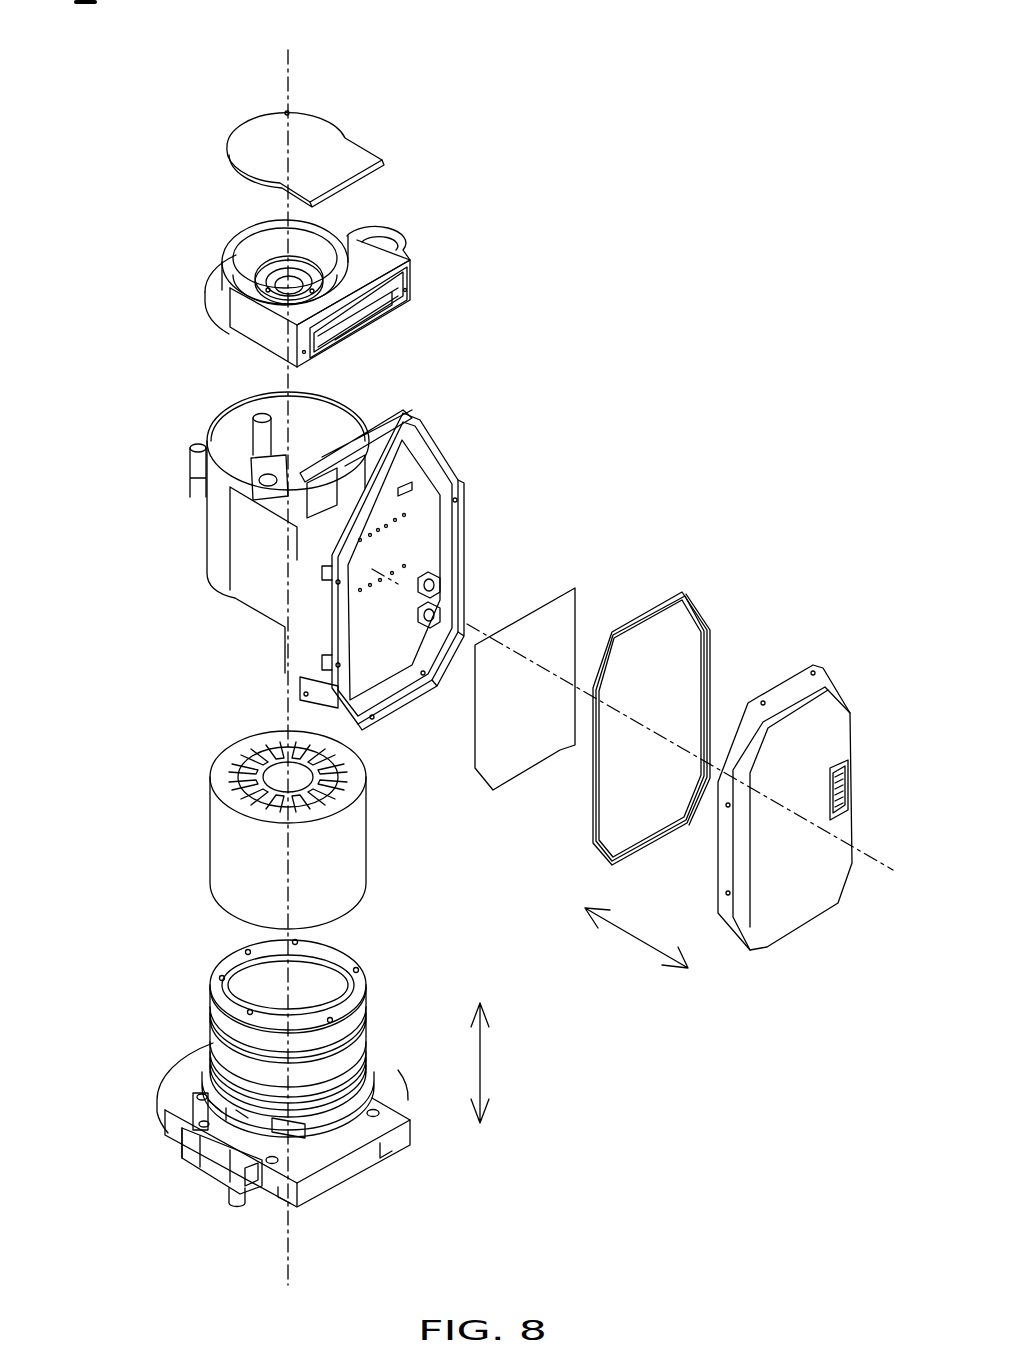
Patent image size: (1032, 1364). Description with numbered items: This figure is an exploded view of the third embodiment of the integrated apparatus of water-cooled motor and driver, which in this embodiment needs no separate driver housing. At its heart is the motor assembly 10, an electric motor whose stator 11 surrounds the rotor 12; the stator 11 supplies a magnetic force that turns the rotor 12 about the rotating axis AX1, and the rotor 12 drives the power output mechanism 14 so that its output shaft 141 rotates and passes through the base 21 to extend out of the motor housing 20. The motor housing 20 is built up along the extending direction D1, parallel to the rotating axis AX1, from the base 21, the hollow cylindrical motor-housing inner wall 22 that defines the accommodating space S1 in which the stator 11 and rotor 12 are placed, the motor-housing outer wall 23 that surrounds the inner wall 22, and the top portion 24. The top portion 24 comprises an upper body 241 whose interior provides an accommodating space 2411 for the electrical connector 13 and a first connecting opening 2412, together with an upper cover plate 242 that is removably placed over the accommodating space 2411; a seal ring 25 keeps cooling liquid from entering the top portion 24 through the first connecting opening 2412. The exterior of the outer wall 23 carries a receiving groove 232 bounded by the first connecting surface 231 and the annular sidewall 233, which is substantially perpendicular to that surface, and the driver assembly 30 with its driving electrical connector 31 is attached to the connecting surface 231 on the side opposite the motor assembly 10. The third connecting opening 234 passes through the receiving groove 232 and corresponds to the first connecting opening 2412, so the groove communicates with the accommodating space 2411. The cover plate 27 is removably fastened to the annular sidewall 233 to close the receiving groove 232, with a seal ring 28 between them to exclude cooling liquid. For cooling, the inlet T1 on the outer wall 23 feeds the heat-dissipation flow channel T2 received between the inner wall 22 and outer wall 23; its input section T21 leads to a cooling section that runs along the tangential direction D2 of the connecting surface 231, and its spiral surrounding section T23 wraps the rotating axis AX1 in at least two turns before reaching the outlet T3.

The motor assembly 10 is at (136, 639).
The stator 11 is at (262, 799).
The rotor 12 is at (242, 771).
The electrical connector 13 is at (270, 268).
The power output mechanism 14 is at (152, 1143).
The output shaft 141 is at (237, 1193).
The motor housing 20 is at (836, 190).
The base 21 is at (248, 1143).
The motor-housing inner wall 22 is at (307, 1020).
The motor-housing outer wall 23 is at (344, 541).
The top portion 24 is at (349, 236).
The seal ring 25 is at (410, 274).
The cover plate 27 is at (819, 807).
The seal ring 28 is at (701, 611).
The driver assembly 30 is at (552, 631).
The driving electrical connector 31 is at (848, 794).
The first connecting surface 231 is at (408, 574).
The receiving groove 232 is at (404, 543).
The annular sidewall 233 is at (455, 516).
The third connecting opening 234 is at (410, 385).
The upper body 241 is at (215, 291).
The upper cover plate 242 is at (256, 146).
The accommodating space 2411 is at (352, 228).
The first connecting opening 2412 is at (376, 307).
The rotating axis AX1 is at (289, 652).
The extending direction D1 is at (500, 1063).
The tangential direction D2 is at (636, 942).
The accommodating space S1 is at (248, 983).
The inlet T1 is at (190, 471).
The heat-dissipation flow channel T2 is at (86, 1012).
The input section T21 is at (245, 1118).
The surrounding section T23 is at (222, 1112).
The outlet T3 is at (262, 443).